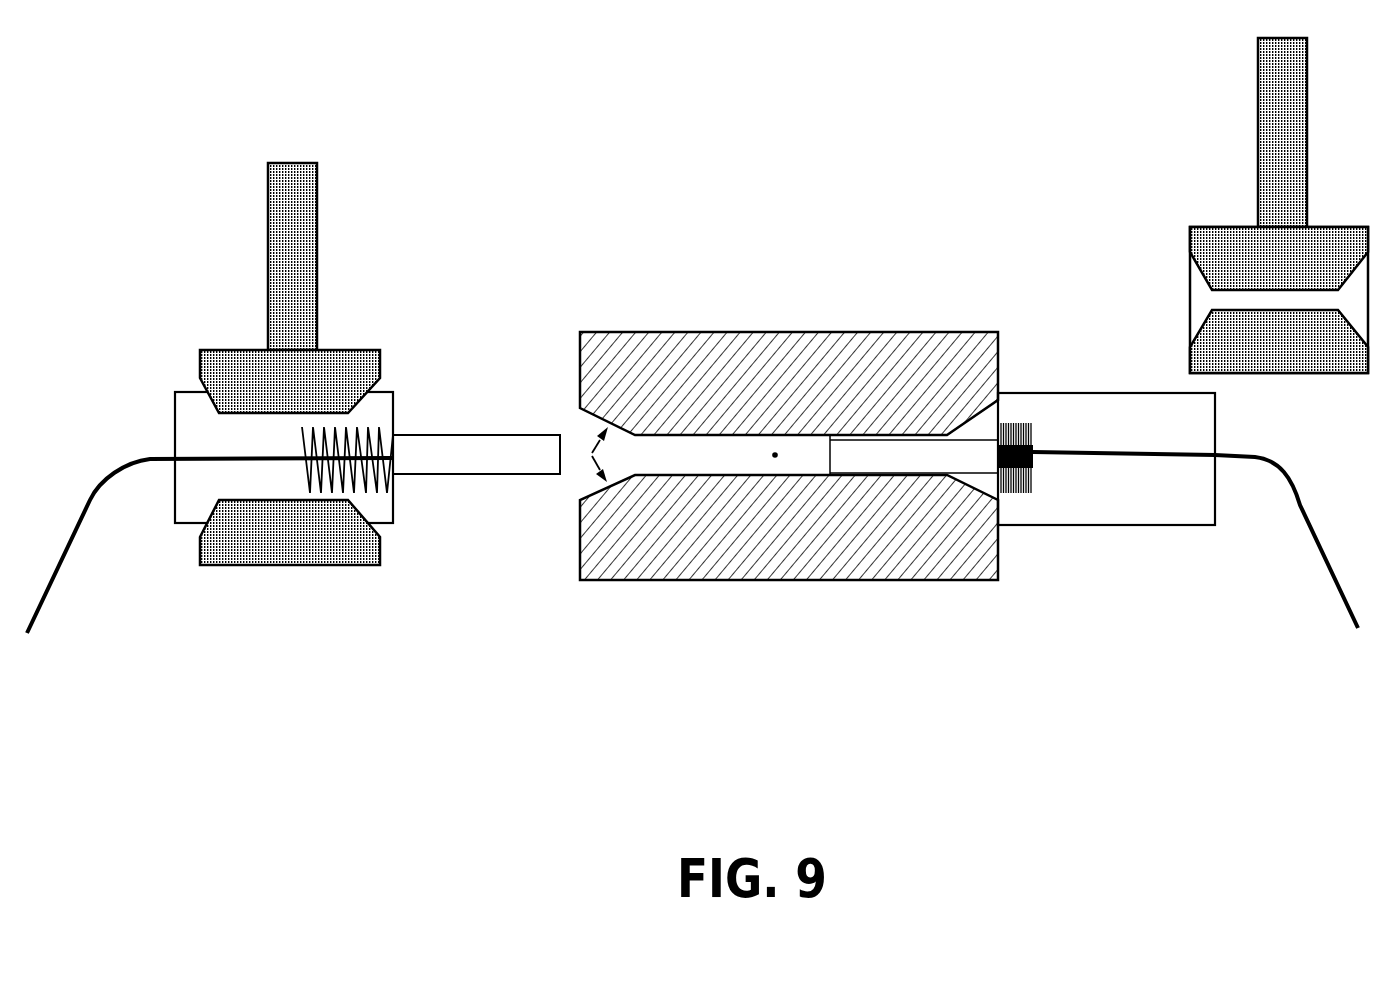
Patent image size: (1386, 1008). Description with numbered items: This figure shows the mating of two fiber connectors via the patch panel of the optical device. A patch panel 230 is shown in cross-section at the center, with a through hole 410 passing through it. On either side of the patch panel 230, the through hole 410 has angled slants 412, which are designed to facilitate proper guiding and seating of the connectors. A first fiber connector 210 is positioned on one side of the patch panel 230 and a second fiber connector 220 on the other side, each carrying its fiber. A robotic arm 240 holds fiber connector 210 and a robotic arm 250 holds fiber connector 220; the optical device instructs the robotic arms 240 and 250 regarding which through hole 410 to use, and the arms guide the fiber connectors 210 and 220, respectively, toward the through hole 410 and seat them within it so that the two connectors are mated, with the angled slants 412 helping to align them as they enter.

The fiber connector 210 is at (175, 392).
The fiber connector 220 is at (1109, 393).
The patch panel 230 is at (797, 332).
The robotic arm 240 is at (380, 350).
The robotic arm 250 is at (1190, 227).
The through hole 410 is at (775, 456).
The angled slants 412 is at (586, 455).